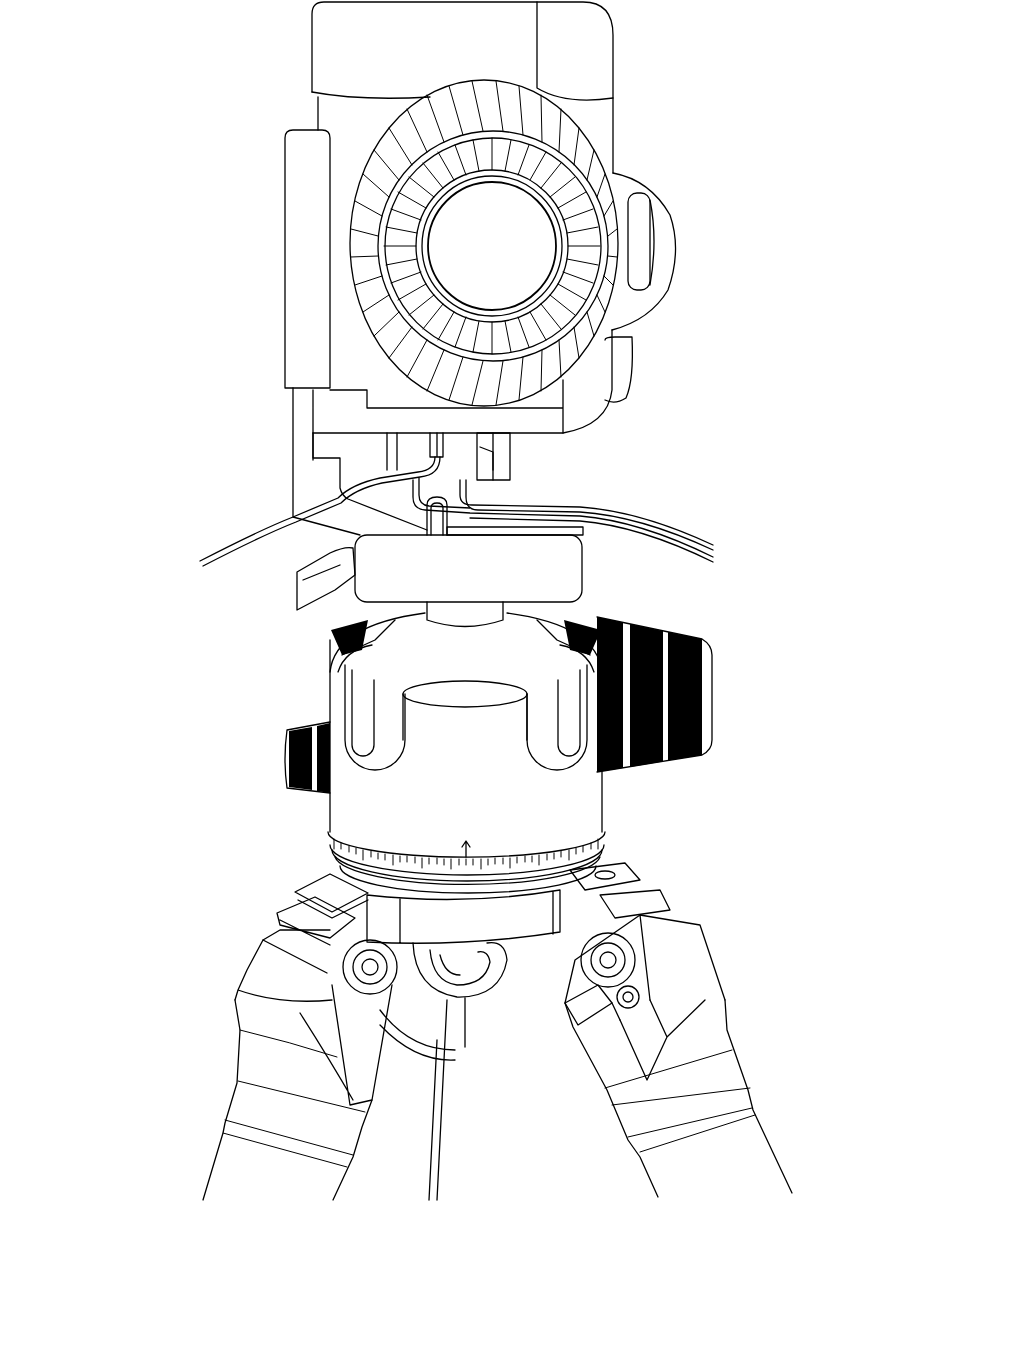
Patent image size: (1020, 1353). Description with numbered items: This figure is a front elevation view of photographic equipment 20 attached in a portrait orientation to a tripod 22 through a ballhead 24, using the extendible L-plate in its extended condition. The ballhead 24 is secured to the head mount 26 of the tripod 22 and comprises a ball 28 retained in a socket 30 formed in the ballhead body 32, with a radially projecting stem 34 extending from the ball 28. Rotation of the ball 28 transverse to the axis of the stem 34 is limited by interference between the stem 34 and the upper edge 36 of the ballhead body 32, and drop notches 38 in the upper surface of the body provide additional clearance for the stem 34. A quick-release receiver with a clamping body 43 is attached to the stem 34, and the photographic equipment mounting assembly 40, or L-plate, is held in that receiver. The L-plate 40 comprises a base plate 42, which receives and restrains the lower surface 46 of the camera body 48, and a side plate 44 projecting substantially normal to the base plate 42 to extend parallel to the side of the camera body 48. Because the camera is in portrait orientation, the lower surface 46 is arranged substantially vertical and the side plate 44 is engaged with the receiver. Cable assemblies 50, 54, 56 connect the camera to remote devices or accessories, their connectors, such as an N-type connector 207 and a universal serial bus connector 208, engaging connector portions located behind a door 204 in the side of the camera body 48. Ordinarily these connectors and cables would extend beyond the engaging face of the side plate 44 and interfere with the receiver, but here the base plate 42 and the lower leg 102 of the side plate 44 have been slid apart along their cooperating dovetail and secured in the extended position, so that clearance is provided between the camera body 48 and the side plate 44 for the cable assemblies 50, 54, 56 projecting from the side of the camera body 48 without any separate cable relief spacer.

The photographic equipment 20 is at (150, 180).
The tripod 22 is at (779, 971).
The ballhead 24 is at (640, 800).
The head mount 26 is at (527, 942).
The ball 28 is at (481, 671).
The socket 30 is at (347, 630).
The ballhead body 32 is at (328, 797).
The stem 34 is at (353, 612).
The upper edge 36 is at (472, 686).
The drop notch 38 is at (370, 735).
The photographic equipment mounting assembly 40 is at (259, 384).
The base plate 42 is at (285, 290).
The clamping body 43 is at (583, 566).
The side plate 44 is at (257, 504).
The lower surface 46 is at (312, 67).
The camera body 48 is at (610, 168).
The cable assembly 50 is at (218, 568).
The cable assembly 54 is at (688, 558).
The cable assembly 56 is at (660, 527).
The lower leg 102 is at (292, 435).
The door 204 is at (512, 446).
The N-type connector 207 is at (475, 478).
The universal serial bus connector 208 is at (482, 450).